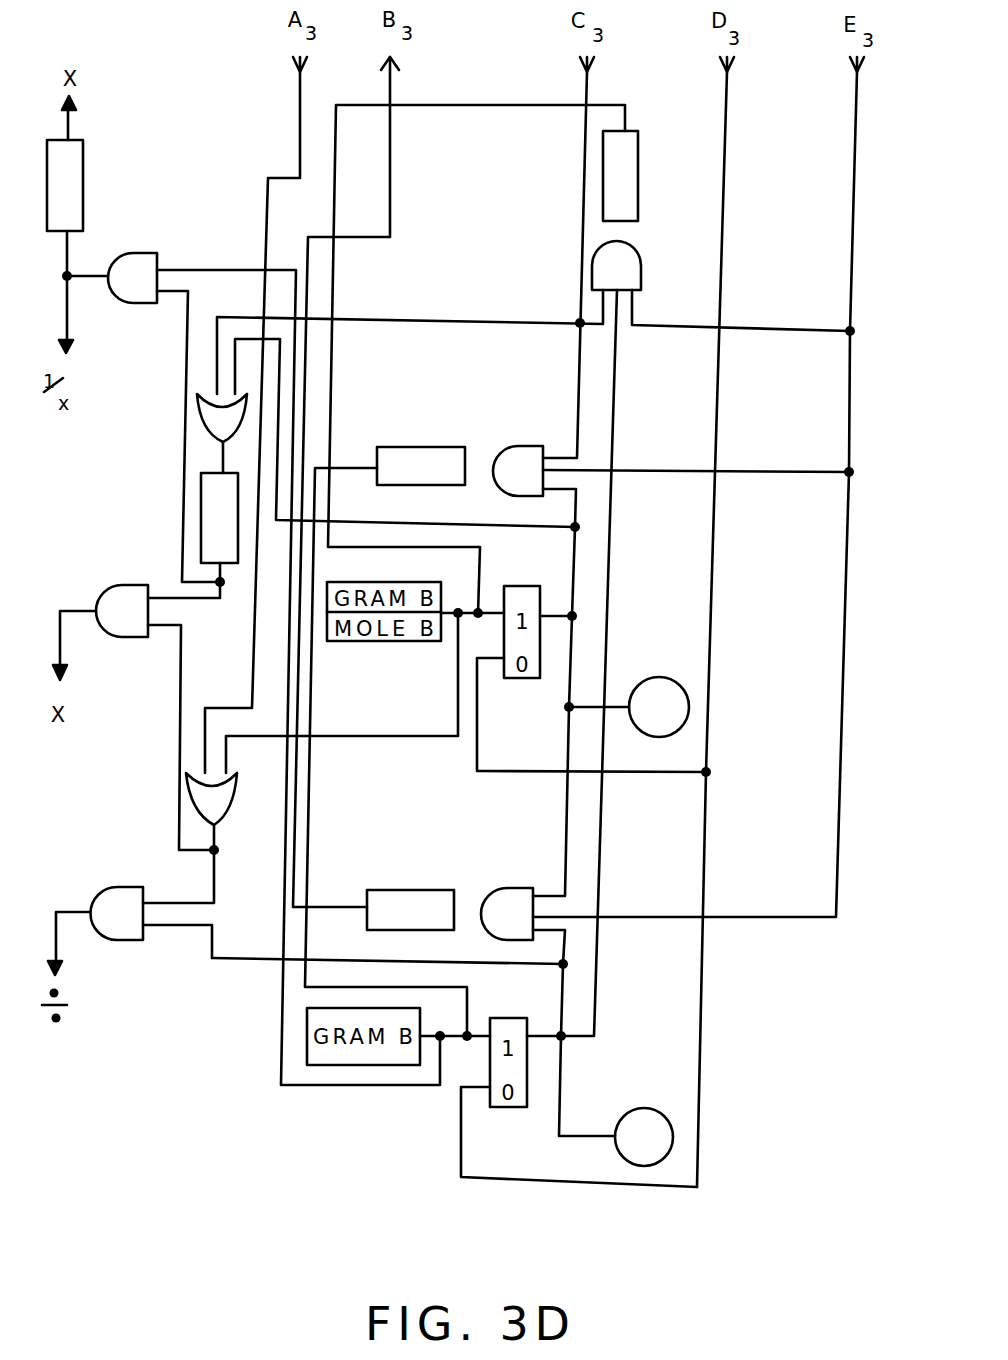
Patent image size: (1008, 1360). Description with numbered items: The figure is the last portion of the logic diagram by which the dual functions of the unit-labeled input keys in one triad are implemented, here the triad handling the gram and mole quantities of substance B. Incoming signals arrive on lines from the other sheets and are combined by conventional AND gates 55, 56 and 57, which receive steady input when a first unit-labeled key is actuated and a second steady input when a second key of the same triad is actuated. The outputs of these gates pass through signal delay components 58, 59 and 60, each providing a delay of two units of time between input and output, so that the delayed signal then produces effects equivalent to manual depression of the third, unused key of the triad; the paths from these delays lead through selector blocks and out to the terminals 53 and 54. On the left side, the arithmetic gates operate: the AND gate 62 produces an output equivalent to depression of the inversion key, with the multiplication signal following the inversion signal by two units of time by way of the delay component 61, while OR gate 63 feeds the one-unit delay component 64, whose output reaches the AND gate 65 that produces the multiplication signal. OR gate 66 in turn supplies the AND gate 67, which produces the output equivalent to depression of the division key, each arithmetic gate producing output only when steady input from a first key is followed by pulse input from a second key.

The output terminal 53 is at (659, 707).
The output terminal 54 is at (644, 1137).
The AND gate 55 is at (616, 265).
The AND gate 56 is at (518, 471).
The AND gate 57 is at (507, 914).
The signal delay component 58 is at (620, 176).
The signal delay component 59 is at (421, 466).
The signal delay component 60 is at (410, 910).
The signal delay component 61 is at (65, 185).
The AND gate 62 is at (132, 278).
The OR gate 63 is at (222, 418).
The signal delay component 64 is at (219, 518).
The AND gate 65 is at (122, 611).
The OR gate 66 is at (211, 799).
The AND gate 67 is at (117, 913).